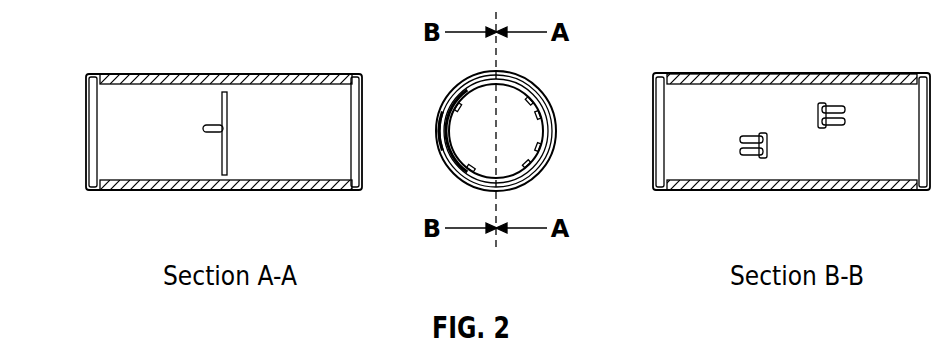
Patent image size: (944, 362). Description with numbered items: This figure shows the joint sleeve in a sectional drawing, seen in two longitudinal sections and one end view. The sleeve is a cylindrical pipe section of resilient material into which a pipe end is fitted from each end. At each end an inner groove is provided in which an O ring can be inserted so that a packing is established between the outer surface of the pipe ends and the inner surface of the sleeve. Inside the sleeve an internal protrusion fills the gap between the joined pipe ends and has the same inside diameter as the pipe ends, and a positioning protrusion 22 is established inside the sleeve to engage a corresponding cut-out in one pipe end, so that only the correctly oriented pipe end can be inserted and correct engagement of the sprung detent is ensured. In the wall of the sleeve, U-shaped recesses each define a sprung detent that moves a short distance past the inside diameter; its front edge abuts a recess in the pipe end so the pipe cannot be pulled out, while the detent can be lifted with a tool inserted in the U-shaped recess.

The positioning protrusion 22 is at (215, 133).